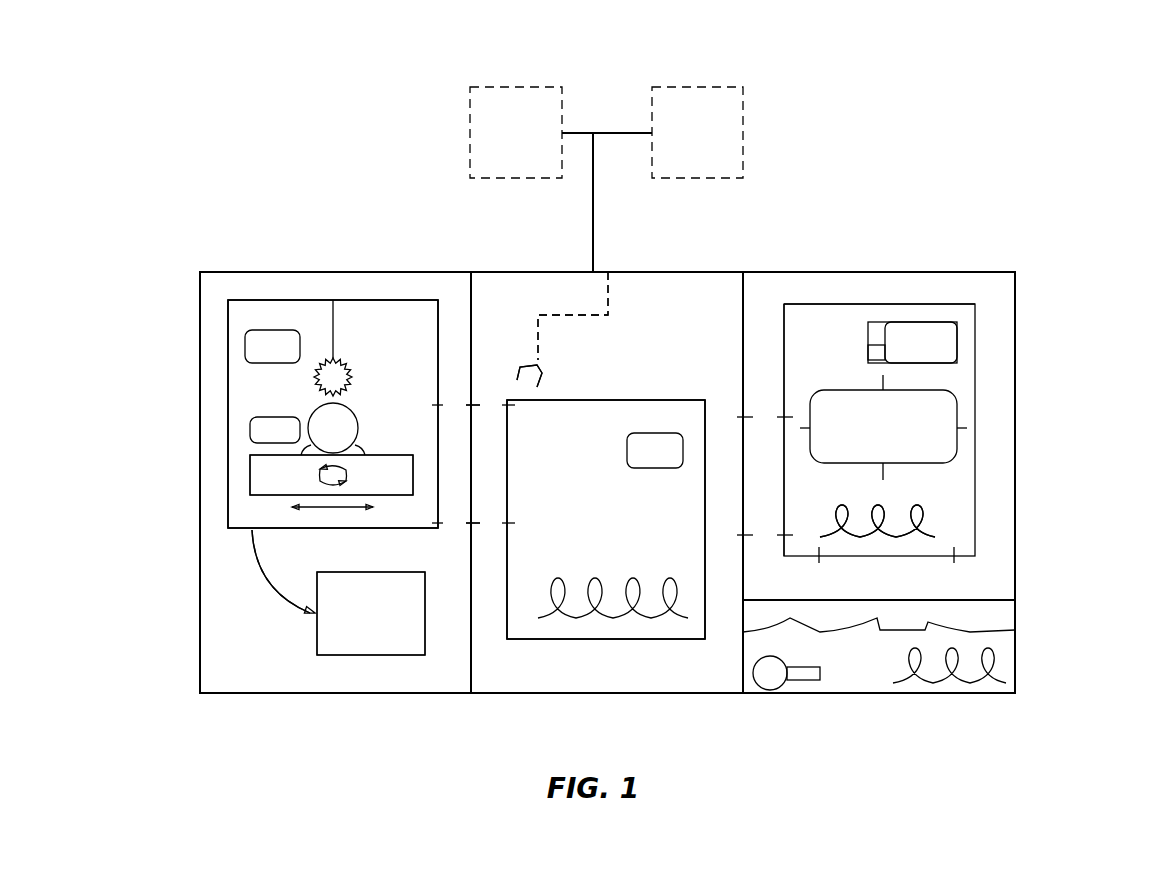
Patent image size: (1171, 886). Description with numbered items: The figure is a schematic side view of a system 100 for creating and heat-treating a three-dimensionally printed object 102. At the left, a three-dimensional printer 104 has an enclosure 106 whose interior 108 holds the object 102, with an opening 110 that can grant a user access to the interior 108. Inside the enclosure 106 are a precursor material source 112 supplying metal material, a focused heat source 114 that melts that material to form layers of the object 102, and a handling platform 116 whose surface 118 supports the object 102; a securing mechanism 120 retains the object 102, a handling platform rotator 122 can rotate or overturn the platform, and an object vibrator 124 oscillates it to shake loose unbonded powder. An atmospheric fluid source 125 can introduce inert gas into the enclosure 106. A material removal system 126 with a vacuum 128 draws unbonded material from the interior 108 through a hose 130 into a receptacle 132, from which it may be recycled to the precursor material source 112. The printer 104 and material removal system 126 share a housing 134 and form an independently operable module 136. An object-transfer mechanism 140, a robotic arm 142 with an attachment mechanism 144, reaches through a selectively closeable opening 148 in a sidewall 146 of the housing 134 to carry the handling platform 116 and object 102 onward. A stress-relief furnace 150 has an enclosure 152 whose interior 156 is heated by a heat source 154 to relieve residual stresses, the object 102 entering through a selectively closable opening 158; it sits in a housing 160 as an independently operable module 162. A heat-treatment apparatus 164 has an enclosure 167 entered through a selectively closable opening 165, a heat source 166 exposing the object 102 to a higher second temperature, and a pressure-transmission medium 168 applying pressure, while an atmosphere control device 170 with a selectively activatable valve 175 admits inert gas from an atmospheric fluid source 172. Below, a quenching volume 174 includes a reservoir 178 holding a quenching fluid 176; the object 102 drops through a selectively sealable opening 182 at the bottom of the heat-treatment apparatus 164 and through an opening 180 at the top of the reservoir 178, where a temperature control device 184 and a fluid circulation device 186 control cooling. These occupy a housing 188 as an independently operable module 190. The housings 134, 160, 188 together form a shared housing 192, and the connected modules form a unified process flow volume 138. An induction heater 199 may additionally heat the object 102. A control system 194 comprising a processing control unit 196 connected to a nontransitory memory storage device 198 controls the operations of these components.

The system 100 is at (287, 108).
The 3D-printed object 102 is at (319, 438).
The 3D printer 104 is at (217, 418).
The enclosure 106 is at (383, 300).
The interior 108 is at (383, 350).
The opening 110 is at (310, 322).
The precursor material source 112 is at (250, 433).
The focused heat source 114 is at (333, 328).
The handling platform 116 is at (264, 485).
The surface 118 is at (397, 450).
The securing mechanism 120 is at (363, 452).
The handling platform rotator 122 is at (350, 474).
The object vibrator 124 is at (340, 510).
The atmospheric fluid source 125 is at (258, 356).
The material removal system 126 is at (393, 747).
The vacuum 128 is at (310, 617).
The hose 130 is at (270, 592).
The receptacle 132 is at (365, 657).
The shared housing 134 is at (198, 318).
The independently operable module 136 is at (235, 258).
The unified process flow volume 138 is at (1097, 493).
The object-transfer mechanism 140 is at (647, 325).
The robotic arm 142 is at (538, 328).
The attachment mechanism 144 is at (540, 368).
The sidewall 146 is at (469, 553).
The selectively closeable opening 148 is at (468, 448).
The stress-relief furnace 150 is at (643, 655).
The enclosure 152 is at (533, 640).
The heat source 154 is at (577, 618).
The interior 156 is at (557, 517).
The selectively closable opening 158 is at (518, 472).
The housing 160 is at (633, 272).
The independently operable module 162 is at (695, 260).
The heat-treatment apparatus 164 is at (992, 365).
The selectively closable opening 165 is at (777, 465).
The heat source 166 is at (900, 540).
The enclosure 167 is at (825, 303).
The pressure-transmission medium 168 is at (867, 438).
The atmosphere control device 170 is at (875, 217).
The atmospheric fluid source 172 is at (923, 322).
The quenching volume 174 is at (985, 595).
The selectively activatable valve 175 is at (875, 345).
The quenching fluid 176 is at (851, 665).
The reservoir 178 is at (880, 598).
The opening 180 is at (783, 598).
The selectively sealable opening 182 is at (940, 547).
The temperature control device 184 is at (935, 683).
The fluid circulation device 186 is at (772, 680).
The housing 188 is at (1017, 293).
The independently operable module 190 is at (795, 258).
The shared housing 192 is at (1048, 657).
The control system 194 is at (538, 87).
The processing control unit 196 is at (500, 144).
The nontransitory memory storage device 198 is at (682, 144).
The induction heater 199 is at (640, 460).